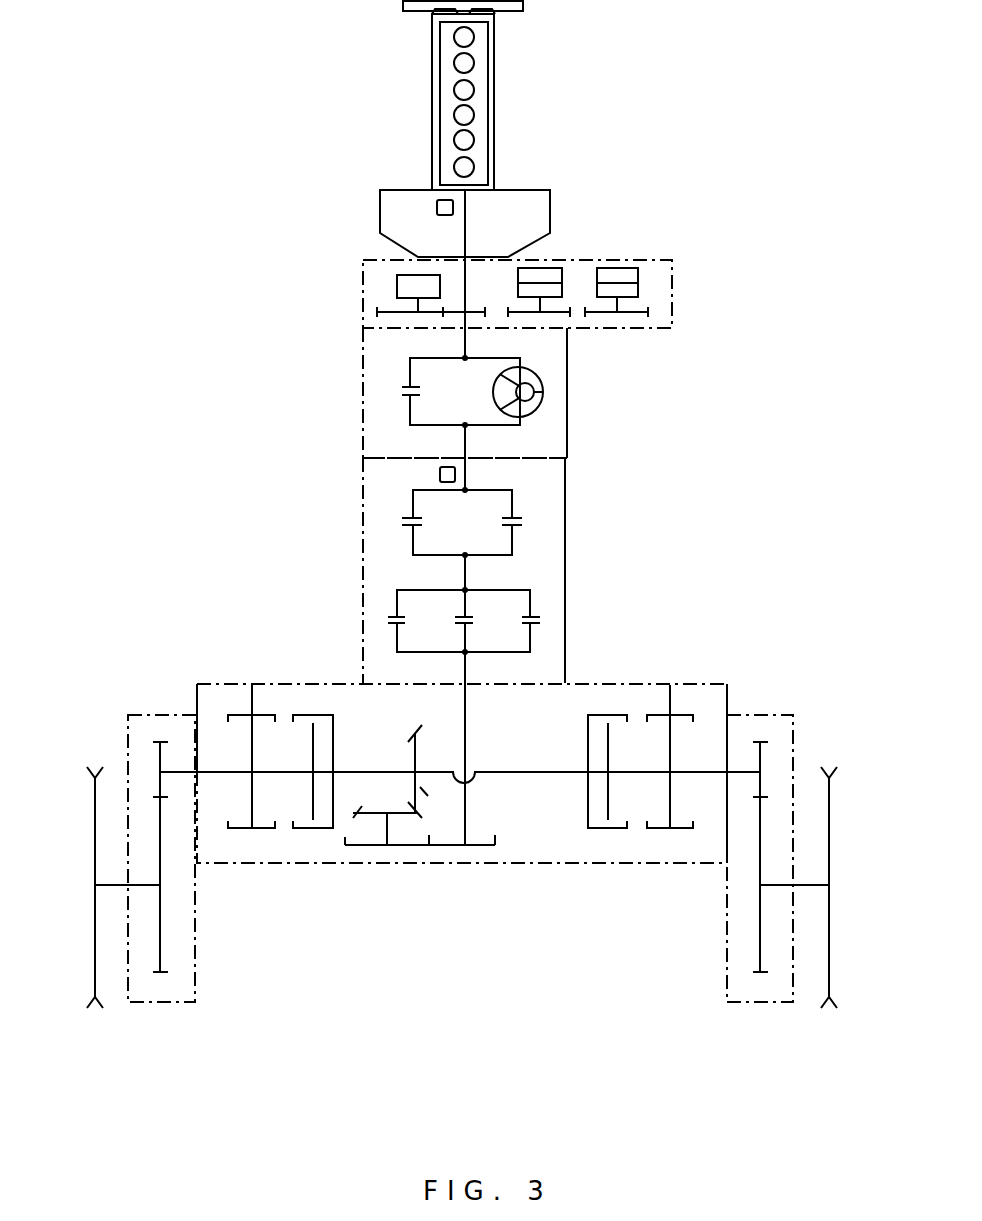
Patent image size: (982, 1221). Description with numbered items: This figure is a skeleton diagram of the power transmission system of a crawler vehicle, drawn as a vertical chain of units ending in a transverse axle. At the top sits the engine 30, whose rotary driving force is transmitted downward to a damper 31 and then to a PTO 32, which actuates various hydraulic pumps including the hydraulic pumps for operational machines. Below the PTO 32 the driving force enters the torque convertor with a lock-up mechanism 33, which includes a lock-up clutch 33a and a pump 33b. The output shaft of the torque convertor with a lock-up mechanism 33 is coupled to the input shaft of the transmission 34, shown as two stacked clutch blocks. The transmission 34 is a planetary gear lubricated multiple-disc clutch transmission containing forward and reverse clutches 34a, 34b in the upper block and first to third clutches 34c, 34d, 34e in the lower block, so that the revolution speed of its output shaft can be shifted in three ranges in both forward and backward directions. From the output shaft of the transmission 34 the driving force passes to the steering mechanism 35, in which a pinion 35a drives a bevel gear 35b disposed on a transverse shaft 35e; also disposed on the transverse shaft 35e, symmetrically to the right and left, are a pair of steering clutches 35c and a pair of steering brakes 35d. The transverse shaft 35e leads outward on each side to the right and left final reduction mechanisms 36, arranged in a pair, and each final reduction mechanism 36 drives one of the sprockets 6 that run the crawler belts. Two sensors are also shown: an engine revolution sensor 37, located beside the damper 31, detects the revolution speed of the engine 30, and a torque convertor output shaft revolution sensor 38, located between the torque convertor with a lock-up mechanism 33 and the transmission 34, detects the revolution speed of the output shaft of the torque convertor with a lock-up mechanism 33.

The sprocket 6 is at (92, 842).
The engine 30 is at (497, 77).
The damper 31 is at (533, 207).
The PTO 32 is at (665, 260).
The torque convertor with a lock-up mechanism 33 is at (567, 425).
The lock-up clutch 33a is at (397, 390).
The pump 33b is at (540, 377).
The transmission 34 is at (565, 540).
The forward clutch 34a is at (402, 520).
The reverse clutch 34b is at (517, 513).
The first clutch 34c is at (388, 623).
The second clutch 34d is at (465, 617).
The third clutch 34e is at (540, 618).
The steering mechanism 35 is at (703, 685).
The pinion 35a is at (402, 817).
The bevel gear 35b is at (420, 787).
The steering clutch 35c is at (313, 828).
The steering brake 35d is at (252, 828).
The transverse shaft 35e is at (575, 773).
The final reduction mechanism 36 is at (180, 1003).
The engine revolution sensor 37 is at (437, 208).
The torque convertor output shaft revolution sensor 38 is at (440, 478).